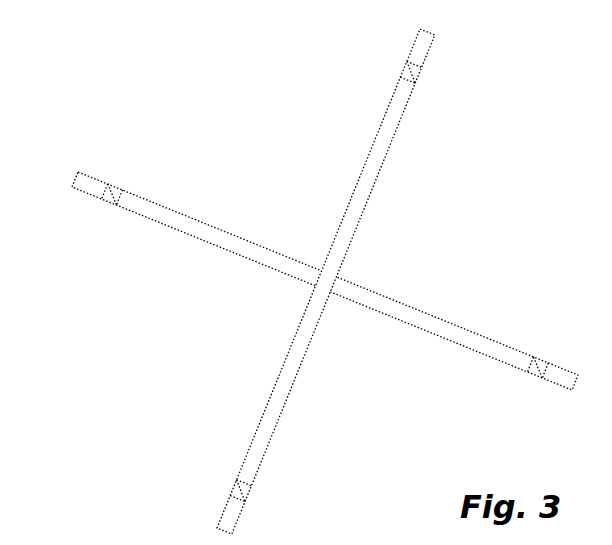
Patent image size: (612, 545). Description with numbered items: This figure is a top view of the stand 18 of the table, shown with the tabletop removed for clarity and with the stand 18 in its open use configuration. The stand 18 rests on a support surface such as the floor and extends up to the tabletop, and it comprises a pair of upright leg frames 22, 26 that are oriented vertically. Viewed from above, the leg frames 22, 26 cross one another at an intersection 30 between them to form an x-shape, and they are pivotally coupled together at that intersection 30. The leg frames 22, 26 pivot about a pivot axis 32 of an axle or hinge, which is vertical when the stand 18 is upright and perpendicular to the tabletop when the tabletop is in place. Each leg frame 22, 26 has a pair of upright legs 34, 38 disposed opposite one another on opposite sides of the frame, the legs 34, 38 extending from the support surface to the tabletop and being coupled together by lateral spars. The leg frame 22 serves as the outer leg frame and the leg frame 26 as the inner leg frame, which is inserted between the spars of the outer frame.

The stand 18 is at (399, 118).
The leg frame 22 is at (260, 450).
The leg frame 26 is at (167, 209).
The intersection 30 is at (334, 278).
The pivot axis 32 is at (330, 282).
The upright leg 34 is at (98, 198).
The upright leg 38 is at (560, 384).